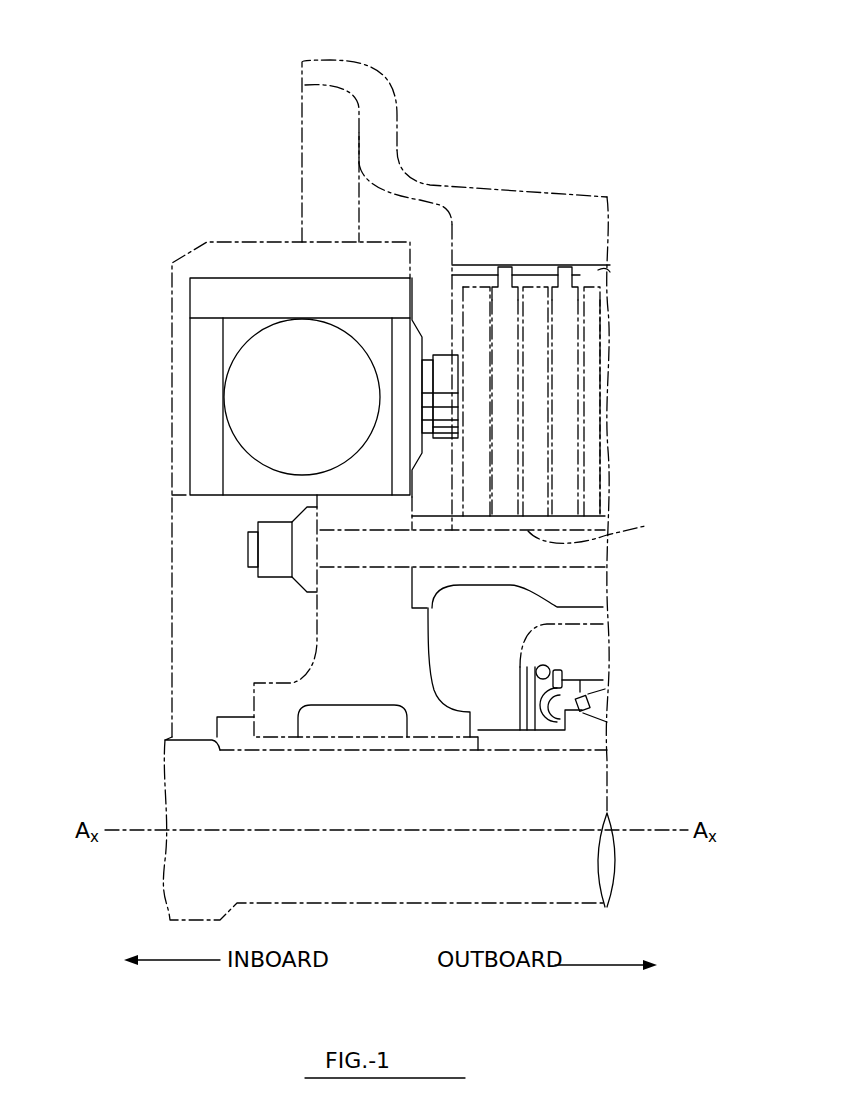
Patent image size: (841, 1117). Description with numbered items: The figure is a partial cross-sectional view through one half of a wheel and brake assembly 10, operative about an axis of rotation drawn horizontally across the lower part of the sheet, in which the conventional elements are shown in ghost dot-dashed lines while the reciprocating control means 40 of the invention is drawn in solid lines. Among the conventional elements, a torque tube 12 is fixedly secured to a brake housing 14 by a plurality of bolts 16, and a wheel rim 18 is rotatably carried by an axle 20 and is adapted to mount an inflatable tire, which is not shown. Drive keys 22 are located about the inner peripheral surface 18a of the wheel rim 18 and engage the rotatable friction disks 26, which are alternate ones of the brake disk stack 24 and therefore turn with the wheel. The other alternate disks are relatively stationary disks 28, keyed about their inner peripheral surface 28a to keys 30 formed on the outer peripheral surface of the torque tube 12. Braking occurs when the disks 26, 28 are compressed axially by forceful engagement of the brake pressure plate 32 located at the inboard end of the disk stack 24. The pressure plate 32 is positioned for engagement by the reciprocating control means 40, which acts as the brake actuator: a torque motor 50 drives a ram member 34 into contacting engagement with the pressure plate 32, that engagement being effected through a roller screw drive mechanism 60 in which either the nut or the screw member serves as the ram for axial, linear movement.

The wheel and brake assembly 10 is at (589, 163).
The torque tube 12 is at (510, 580).
The brake housing 14 is at (337, 648).
The bolts 16 is at (273, 558).
The wheel rim 18 is at (335, 76).
The inner peripheral surface 18a is at (600, 266).
The axle 20 is at (595, 780).
The drive keys 22 is at (593, 286).
The brake disk stack 24 is at (596, 367).
The rotatable friction disks 26 is at (507, 265).
The stationary disks 28 is at (540, 437).
The inner peripheral surface 28a is at (608, 525).
The keys 30 is at (438, 520).
The brake pressure plate 32 is at (477, 292).
The ram member 34 is at (438, 357).
The reciprocating control means 40 is at (183, 307).
The torque motor 50 is at (253, 410).
The roller screw drive mechanism 60 is at (215, 367).